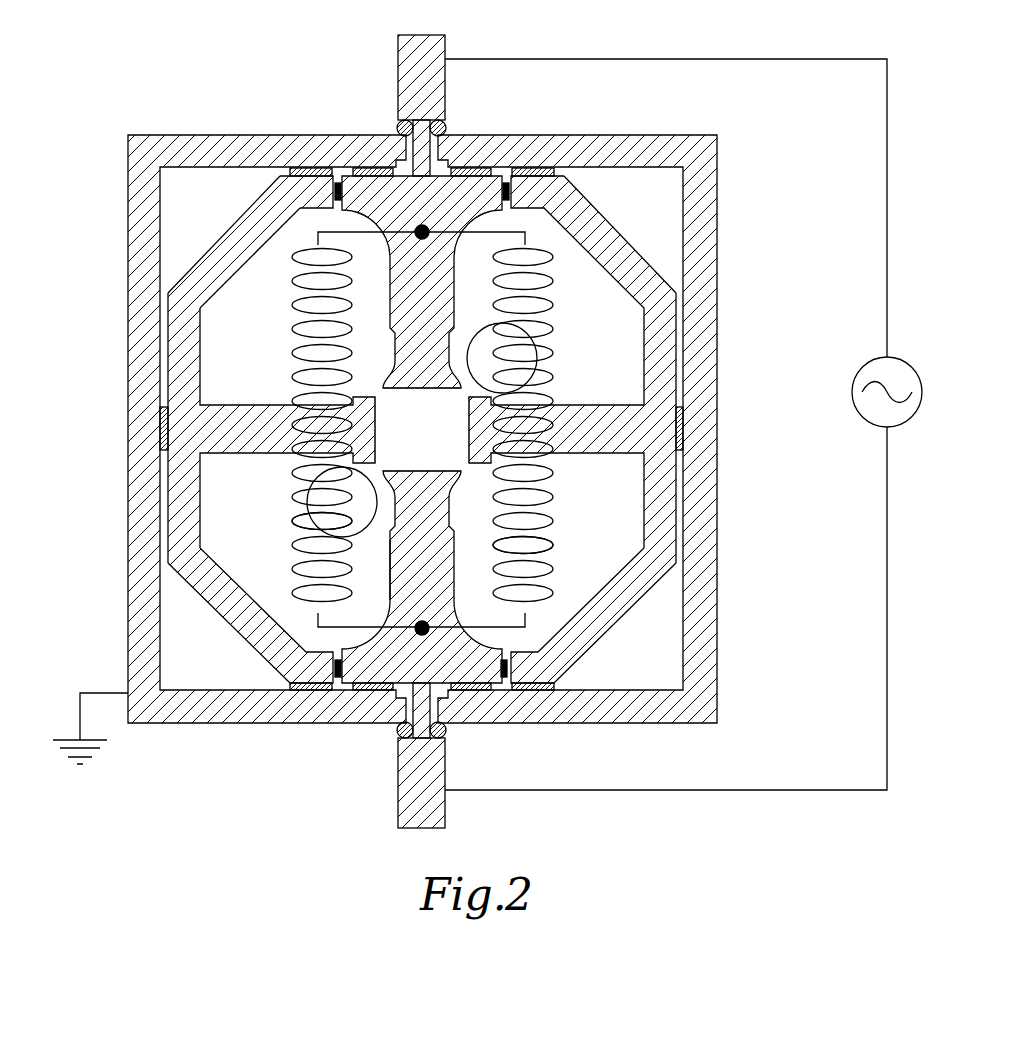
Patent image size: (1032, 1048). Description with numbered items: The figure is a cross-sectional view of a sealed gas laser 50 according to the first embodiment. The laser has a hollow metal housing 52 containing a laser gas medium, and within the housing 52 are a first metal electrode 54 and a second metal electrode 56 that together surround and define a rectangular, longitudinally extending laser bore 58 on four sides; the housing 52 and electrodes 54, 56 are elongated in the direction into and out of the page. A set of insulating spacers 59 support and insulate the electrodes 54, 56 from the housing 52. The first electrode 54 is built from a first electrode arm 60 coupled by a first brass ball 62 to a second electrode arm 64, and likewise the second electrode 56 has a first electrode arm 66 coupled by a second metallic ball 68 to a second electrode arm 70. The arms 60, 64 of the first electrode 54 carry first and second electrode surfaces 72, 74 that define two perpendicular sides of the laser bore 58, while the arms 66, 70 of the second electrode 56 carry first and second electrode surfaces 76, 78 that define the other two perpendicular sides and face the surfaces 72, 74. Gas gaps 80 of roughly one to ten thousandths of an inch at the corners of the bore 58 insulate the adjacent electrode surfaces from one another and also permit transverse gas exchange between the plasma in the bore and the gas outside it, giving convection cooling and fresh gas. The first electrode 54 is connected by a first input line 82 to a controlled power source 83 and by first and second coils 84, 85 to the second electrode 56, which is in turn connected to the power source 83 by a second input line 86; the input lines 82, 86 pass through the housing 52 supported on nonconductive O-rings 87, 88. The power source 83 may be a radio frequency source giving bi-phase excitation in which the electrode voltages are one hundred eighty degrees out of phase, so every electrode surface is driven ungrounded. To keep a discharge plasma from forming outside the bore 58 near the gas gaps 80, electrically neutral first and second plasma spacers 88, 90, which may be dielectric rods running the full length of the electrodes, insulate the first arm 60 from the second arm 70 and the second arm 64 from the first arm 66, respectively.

The sealed gas laser 50 is at (766, 95).
The hollow metal housing 52 is at (718, 200).
The first metal electrode 54 is at (210, 232).
The second metal electrode 56 is at (640, 626).
The laser bore 58 is at (447, 442).
The insulating spacers 59 is at (315, 170).
The first electrode arm 60 is at (440, 282).
The first brass ball 62 is at (307, 425).
The second electrode arm 64 is at (212, 413).
The first electrode arm 66 is at (433, 582).
The second metallic ball 68 is at (509, 668).
The second electrode arm 70 is at (630, 438).
The first electrode surface 72 is at (432, 390).
The second electrode surface 74 is at (378, 423).
The first electrode surface 76 is at (396, 472).
The second electrode surface 78 is at (468, 416).
The gas gaps 80 is at (376, 383).
The first input line 82 is at (438, 50).
The controlled power source 83 is at (856, 375).
The first coil 84 is at (553, 568).
The second coil 85 is at (296, 538).
The second input line 86 is at (396, 768).
The nonconductive O-ring 87 is at (398, 127).
The nonconductive O-ring / first plasma spacer 88 is at (446, 737).
The second plasma spacer 90 is at (376, 522).